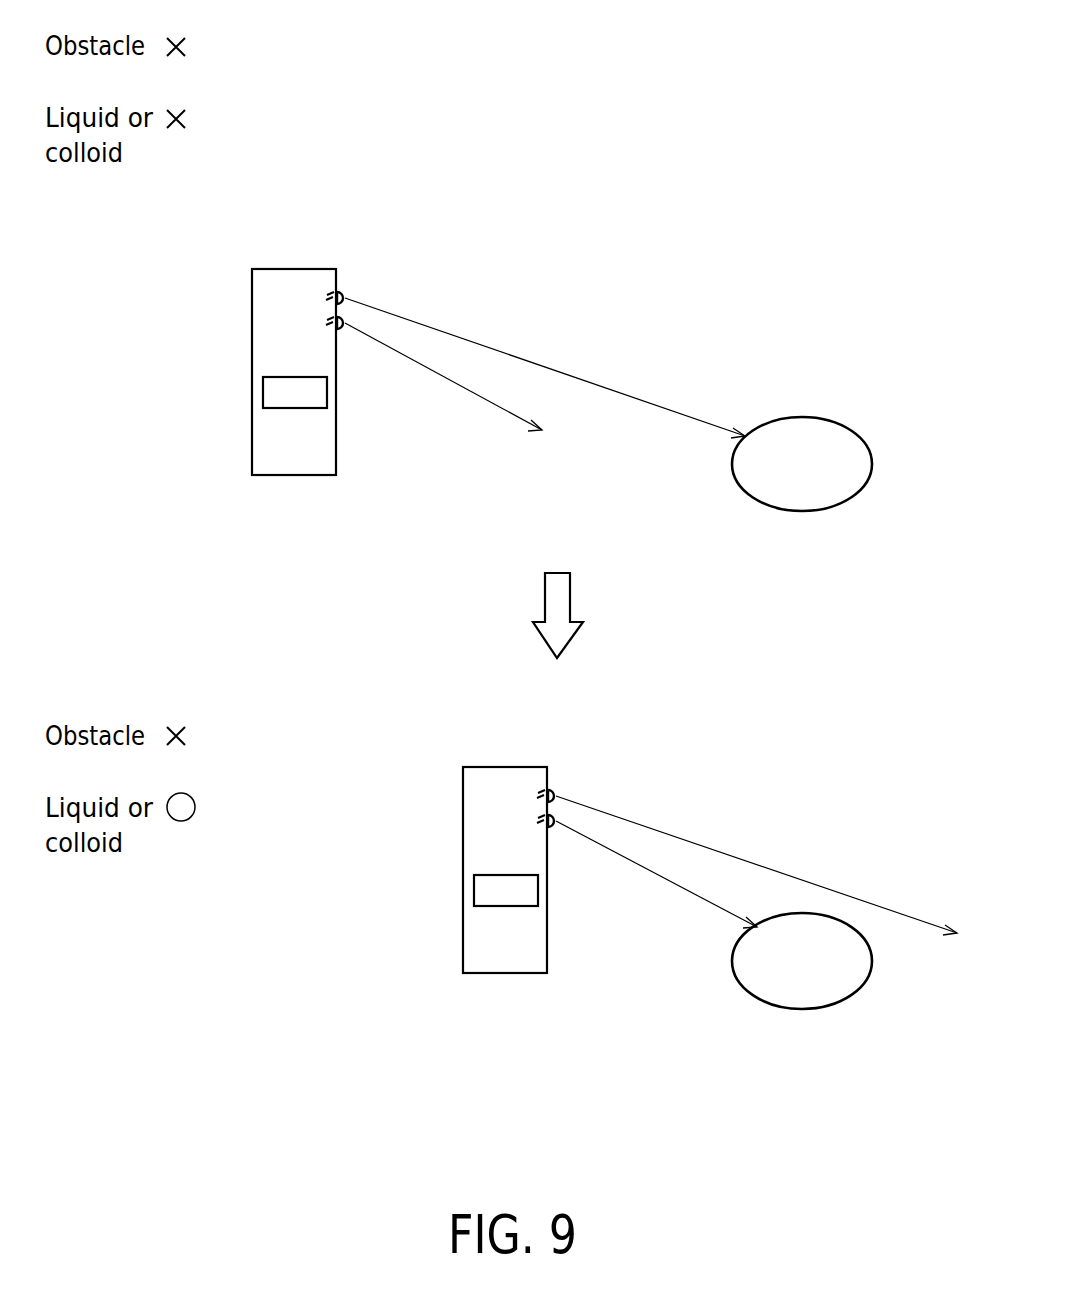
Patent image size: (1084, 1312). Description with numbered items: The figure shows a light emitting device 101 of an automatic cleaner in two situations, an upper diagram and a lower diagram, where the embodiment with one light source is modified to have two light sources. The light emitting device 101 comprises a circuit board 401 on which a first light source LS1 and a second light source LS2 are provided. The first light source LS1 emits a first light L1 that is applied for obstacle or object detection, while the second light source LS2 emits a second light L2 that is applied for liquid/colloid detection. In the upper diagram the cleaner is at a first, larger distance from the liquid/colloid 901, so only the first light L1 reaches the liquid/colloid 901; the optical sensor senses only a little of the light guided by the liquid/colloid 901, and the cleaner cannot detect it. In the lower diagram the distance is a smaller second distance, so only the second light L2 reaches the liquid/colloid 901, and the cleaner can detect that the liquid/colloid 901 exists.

The circuit board 401 is at (323, 280).
The light emitting device 101 is at (428, 223).
The first light source LS1 is at (349, 295).
The second light source LS2 is at (343, 332).
The first light L1 is at (651, 616).
The second light L2 is at (551, 625).
The liquid/colloid 901 is at (817, 512).